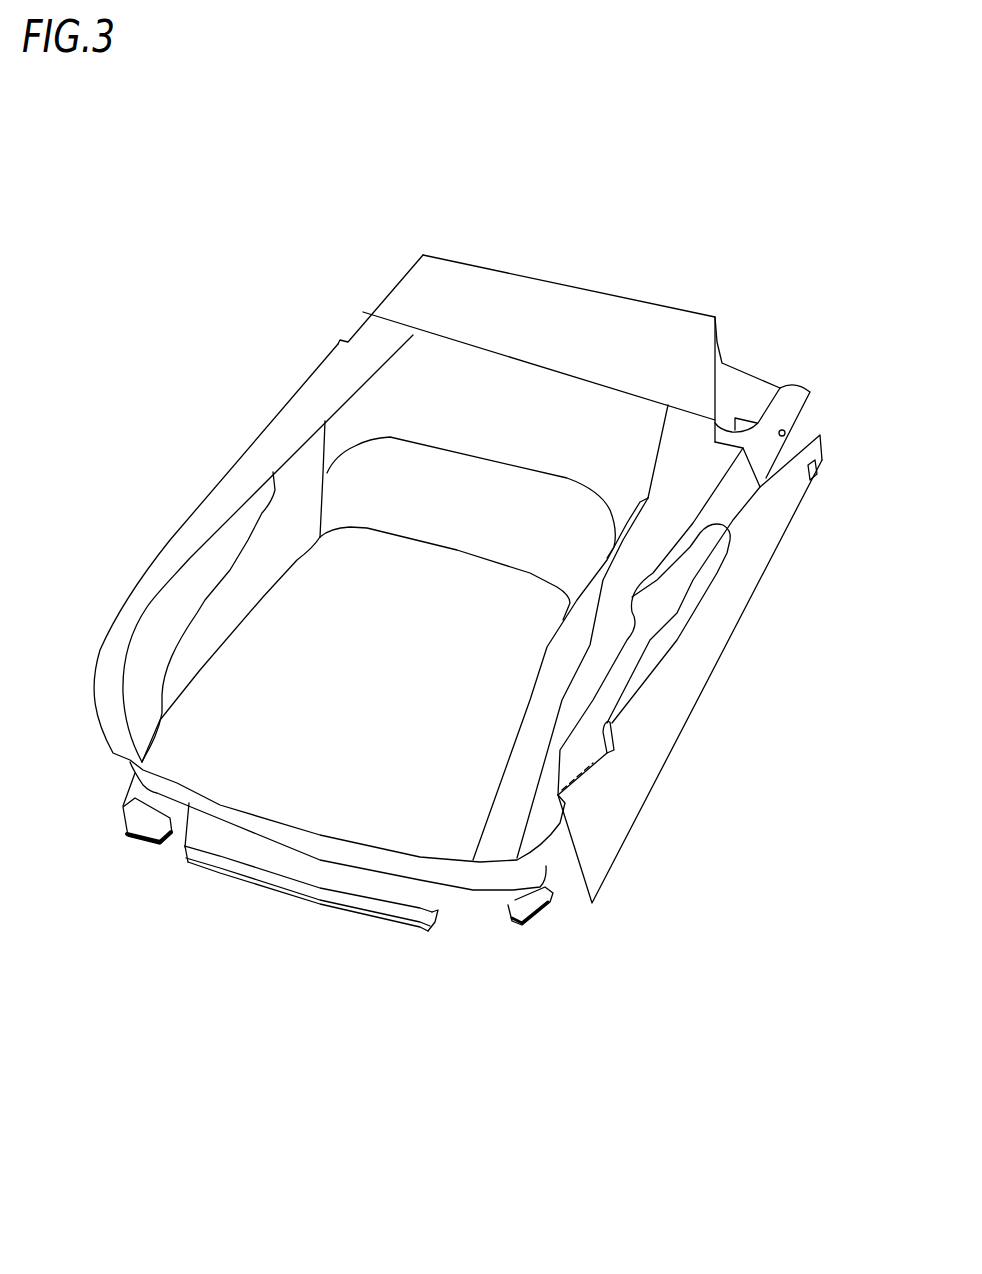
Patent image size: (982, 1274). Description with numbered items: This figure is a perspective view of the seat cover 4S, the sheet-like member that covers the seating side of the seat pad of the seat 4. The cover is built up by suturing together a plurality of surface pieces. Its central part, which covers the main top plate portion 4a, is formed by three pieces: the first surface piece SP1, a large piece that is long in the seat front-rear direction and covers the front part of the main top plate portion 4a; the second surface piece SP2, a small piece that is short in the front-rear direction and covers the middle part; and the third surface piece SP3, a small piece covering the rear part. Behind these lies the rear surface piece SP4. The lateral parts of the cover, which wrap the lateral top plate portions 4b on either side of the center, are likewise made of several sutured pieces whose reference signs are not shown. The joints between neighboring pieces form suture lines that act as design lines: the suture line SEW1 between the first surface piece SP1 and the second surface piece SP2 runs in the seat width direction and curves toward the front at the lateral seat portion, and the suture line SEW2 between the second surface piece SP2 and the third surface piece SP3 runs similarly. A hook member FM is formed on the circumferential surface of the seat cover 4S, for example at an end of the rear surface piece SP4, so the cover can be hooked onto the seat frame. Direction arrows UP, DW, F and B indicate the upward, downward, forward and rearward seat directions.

The seat cushion 4 is at (768, 350).
The seat cover 4S is at (723, 281).
The main top plate portion 4a is at (338, 731).
The lateral top plate portions 4b is at (401, 679).
The first surface piece SP1 is at (298, 605).
The second surface piece SP2 is at (355, 475).
The third surface piece SP3 is at (394, 398).
The rear surface piece SP4 is at (533, 300).
The suture line SEW1 is at (462, 538).
The suture line SEW2 is at (571, 476).
The hook member FM is at (327, 900).
The upward direction UP is at (448, 185).
The rearward direction B is at (625, 234).
The forward direction F is at (216, 972).
The downward direction DW is at (447, 1003).